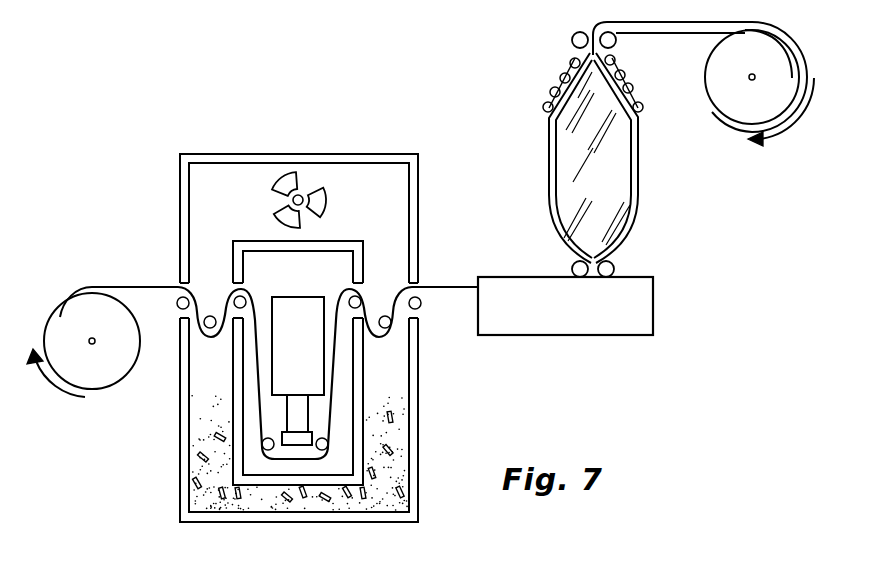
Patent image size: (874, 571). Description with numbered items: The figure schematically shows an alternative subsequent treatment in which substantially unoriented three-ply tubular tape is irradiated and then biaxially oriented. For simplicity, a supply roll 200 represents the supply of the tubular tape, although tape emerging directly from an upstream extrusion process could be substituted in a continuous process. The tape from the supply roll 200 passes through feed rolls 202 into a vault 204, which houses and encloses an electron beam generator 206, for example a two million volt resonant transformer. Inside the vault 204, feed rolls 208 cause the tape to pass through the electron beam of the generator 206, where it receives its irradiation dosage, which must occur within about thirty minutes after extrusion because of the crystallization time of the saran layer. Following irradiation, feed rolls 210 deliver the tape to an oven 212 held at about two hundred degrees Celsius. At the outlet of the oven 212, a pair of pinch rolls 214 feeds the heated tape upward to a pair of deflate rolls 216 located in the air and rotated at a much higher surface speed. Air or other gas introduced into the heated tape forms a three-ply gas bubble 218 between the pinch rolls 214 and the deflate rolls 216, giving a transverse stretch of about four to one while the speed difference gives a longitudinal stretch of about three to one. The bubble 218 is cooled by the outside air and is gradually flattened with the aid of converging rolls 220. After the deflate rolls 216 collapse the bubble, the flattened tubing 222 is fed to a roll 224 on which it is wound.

The supply roll 200 is at (111, 380).
The feed rolls 202 is at (285, 373).
The vault 204 is at (192, 440).
The electron beam generator 206 is at (320, 272).
The feed rolls 208 is at (318, 451).
The feed rolls 210 is at (419, 306).
The oven 212 is at (585, 336).
The pinch rolls 214 is at (614, 263).
The deflate rolls 216 is at (572, 40).
The gas bubble 218 is at (640, 205).
The converging rolls 220 is at (641, 107).
The flattened tubing 222 is at (638, 34).
The roll 224 is at (793, 47).